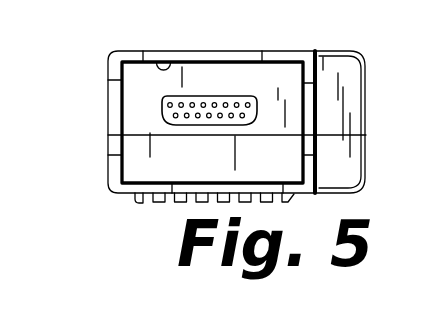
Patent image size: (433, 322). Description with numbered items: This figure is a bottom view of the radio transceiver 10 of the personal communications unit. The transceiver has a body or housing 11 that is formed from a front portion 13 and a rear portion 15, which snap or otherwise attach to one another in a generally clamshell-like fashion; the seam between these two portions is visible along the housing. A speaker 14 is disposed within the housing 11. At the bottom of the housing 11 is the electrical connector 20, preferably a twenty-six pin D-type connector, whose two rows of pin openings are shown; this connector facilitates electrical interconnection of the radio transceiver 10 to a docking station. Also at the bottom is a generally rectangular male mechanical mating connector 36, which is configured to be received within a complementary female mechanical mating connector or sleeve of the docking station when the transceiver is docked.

The radio transceiver 10 is at (97, 95).
The housing 11 is at (366, 101).
The front portion 13 is at (363, 162).
The speaker 14 is at (157, 204).
The rear portion 15 is at (222, 51).
The electrical connector 20 is at (161, 108).
The male mechanical mating connector 36 is at (164, 61).